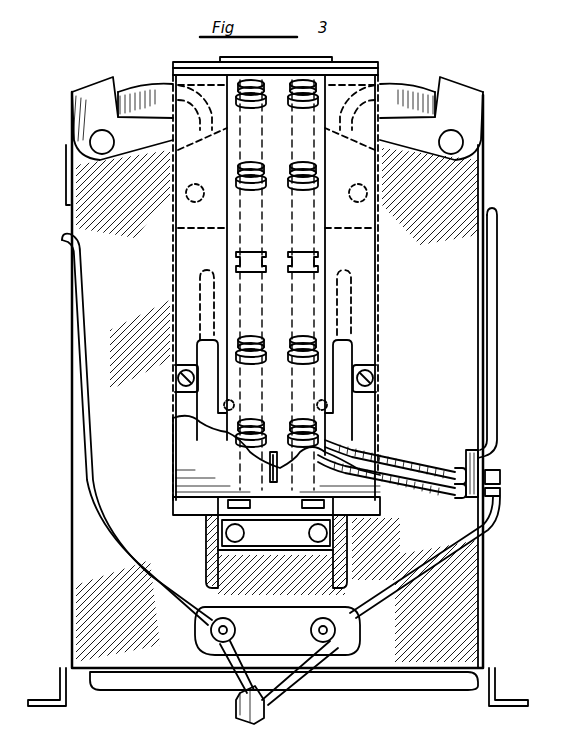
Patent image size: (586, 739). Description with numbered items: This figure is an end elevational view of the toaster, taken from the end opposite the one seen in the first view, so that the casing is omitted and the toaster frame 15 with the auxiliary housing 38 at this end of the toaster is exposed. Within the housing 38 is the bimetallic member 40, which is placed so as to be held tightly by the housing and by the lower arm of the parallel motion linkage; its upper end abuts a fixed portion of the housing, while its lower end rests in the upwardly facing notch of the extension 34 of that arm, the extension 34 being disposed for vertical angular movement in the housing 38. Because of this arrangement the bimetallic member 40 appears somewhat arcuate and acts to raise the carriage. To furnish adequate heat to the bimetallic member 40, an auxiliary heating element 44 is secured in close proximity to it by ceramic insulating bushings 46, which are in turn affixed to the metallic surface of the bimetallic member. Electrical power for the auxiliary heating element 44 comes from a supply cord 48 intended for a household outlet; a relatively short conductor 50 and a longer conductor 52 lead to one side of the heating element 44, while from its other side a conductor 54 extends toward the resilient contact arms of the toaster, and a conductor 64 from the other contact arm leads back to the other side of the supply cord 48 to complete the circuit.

The toaster frame 15 is at (79, 228).
The extension 34 is at (268, 458).
The auxiliary housing 38 is at (173, 466).
The bimetallic member 40 is at (328, 217).
The auxiliary heating element 44 is at (256, 230).
The ceramic insulating bushings 46 is at (392, 470).
The supply cord 48 is at (232, 706).
The conductor 50 is at (365, 596).
The conductor 52 is at (412, 468).
The conductor 54 is at (405, 484).
The conductor 64 is at (147, 562).